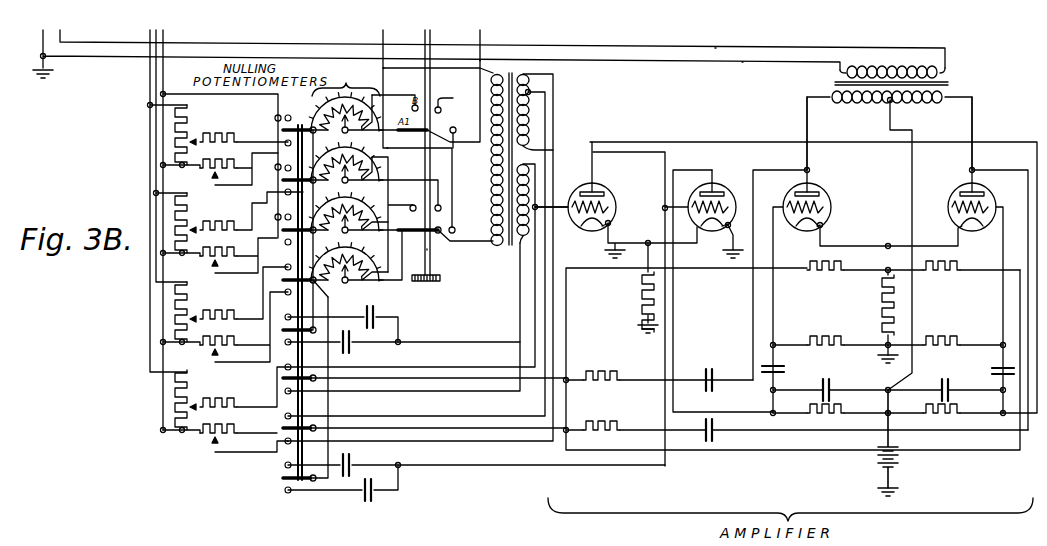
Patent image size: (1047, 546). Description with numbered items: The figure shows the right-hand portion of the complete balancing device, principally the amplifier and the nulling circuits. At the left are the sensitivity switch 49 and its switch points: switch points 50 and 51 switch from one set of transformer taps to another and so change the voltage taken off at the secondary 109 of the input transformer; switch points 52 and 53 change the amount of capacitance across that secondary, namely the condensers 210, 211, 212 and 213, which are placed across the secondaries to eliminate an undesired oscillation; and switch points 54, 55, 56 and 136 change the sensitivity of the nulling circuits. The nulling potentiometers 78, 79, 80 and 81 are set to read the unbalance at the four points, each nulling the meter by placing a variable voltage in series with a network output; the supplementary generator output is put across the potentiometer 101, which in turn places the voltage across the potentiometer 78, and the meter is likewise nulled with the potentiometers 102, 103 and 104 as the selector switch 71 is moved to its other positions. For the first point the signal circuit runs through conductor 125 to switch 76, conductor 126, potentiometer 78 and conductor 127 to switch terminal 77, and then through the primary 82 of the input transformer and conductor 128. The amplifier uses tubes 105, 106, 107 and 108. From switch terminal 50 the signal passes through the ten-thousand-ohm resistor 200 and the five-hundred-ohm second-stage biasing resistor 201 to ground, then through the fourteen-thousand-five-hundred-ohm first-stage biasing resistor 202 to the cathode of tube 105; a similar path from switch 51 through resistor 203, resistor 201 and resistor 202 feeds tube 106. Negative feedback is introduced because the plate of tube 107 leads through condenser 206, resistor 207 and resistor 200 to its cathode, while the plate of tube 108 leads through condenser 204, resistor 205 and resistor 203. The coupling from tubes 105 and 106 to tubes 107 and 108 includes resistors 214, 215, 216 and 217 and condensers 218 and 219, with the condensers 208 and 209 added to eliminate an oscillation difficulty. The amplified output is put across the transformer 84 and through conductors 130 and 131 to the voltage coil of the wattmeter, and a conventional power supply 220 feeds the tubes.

The sensitivity switch 49 is at (286, 413).
The switch terminal 50 is at (316, 374).
The switch point 51 is at (316, 424).
The switch point 52 is at (316, 326).
The switch point 53 is at (308, 484).
The switch point 54 is at (305, 118).
The switch point 55 is at (305, 173).
The switch point 56 is at (305, 222).
The selector switch 71 is at (432, 250).
The switch 76 is at (453, 99).
The switch terminal 77 is at (455, 215).
The nulling potentiometer 78 is at (352, 284).
The potentiometer 79 is at (352, 234).
The potentiometer 80 is at (352, 184).
The potentiometer 81 is at (352, 134).
The input transformer primary 82 is at (511, 183).
The output transformer 84 is at (892, 228).
The potentiometer 101 is at (236, 401).
The potentiometer 102 is at (236, 313).
The potentiometer 103 is at (236, 224).
The potentiometer 104 is at (236, 136).
The tube 105 is at (614, 198).
The tube 106 is at (714, 185).
The tube 107 is at (826, 191).
The tube 108 is at (990, 200).
The input transformer secondary 109 is at (508, 247).
The conductor 125 is at (478, 81).
The conductor 126 is at (389, 176).
The conductor 127 is at (419, 243).
The conductor 128 is at (383, 66).
The conductor 130 is at (718, 51).
The conductor 131 is at (742, 61).
The switch point 136 is at (314, 288).
The 10,000 ohm resistor 200 is at (829, 274).
The 500 ohm second stage biasing resistor 201 is at (898, 312).
The 14,500 ohm first stage biasing resistor 202 is at (642, 288).
The 10,000 ohm resistor 203 is at (950, 274).
The 1 microfarad condenser 204 is at (713, 440).
The 1.2 meg. resistor 205 is at (594, 426).
The 1 microfarad condenser 206 is at (712, 372).
The 1.2 meg. resistor 207 is at (594, 377).
The .02 microfarad condenser 208 is at (830, 391).
The .02 microfarad condenser 209 is at (950, 390).
The condenser 210 is at (356, 462).
The condenser 211 is at (376, 496).
The condenser 212 is at (404, 346).
The condenser 213 is at (378, 315).
The resistor 214 is at (832, 340).
The resistor 215 is at (948, 340).
The resistor 216 is at (838, 415).
The resistor 217 is at (950, 416).
The condenser 218 is at (785, 368).
The condenser 219 is at (1000, 363).
The power supply 220 is at (898, 480).